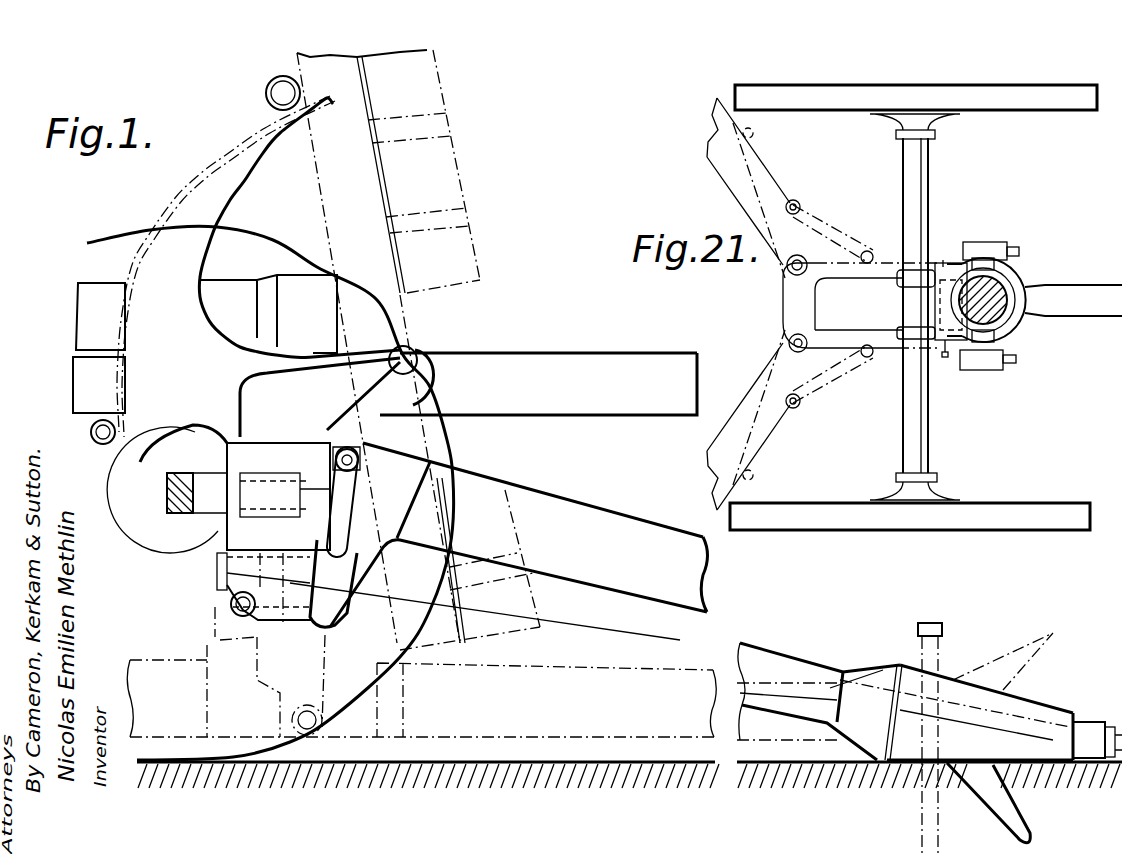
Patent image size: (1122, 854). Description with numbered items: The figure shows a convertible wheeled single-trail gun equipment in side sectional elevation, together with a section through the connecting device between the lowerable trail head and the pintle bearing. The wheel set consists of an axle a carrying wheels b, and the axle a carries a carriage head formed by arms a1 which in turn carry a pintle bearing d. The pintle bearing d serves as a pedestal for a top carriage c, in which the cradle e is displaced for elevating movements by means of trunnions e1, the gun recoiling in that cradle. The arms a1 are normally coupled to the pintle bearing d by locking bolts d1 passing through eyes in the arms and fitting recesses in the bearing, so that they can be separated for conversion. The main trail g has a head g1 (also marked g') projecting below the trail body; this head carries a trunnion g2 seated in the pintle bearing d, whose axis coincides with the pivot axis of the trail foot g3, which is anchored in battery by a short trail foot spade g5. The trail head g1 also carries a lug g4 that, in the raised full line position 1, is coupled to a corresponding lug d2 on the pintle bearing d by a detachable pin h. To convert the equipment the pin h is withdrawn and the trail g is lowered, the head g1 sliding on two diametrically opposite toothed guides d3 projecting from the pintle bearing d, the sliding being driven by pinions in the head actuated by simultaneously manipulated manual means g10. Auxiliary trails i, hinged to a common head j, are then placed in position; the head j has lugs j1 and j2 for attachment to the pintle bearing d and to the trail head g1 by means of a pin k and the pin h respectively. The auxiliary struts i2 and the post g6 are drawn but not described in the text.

In FIG. 1, the axle a is at (162, 490).
In FIG. 21, the axle a is at (917, 180).
In FIG. 1, the arms a1 is at (208, 480).
In FIG. 1, the wheels b is at (269, 252).
In FIG. 21, the wheels b is at (1055, 108).
In FIG. 1, the top carriage c is at (551, 362).
In FIG. 1, the trunnions e1 is at (400, 357).
In FIG. 1, the cradle e is at (638, 674).
In FIG. 1, the pintle bearing d is at (235, 487).
In FIG. 21, the pintle bearing d is at (1010, 320).
In FIG. 21, the locking bolts d1 is at (945, 358).
In FIG. 1, the lug d2 is at (338, 447).
In FIG. 21, the toothed guides d3 is at (983, 400).
In FIG. 1, the main trail g is at (519, 535).
In FIG. 21, the main trail g is at (1073, 327).
In FIG. 21, the trail head g' is at (1014, 295).
In FIG. 1, the trail head g1 is at (392, 585).
In FIG. 1, the trunnion g2 is at (300, 565).
In FIG. 21, the trail foot g3 is at (1037, 715).
In FIG. 1, the lug g4 is at (365, 448).
In FIG. 21, the trail foot spade g5 is at (1017, 810).
In FIG. 21, the post g6 is at (927, 827).
In FIG. 21, the manual means g10 is at (1013, 250).
In FIG. 1, the detachable pin h is at (364, 468).
In FIG. 21, the auxiliary trails i is at (742, 160).
In FIG. 21, the strut i2 is at (843, 233).
In FIG. 1, the common head j is at (140, 664).
In FIG. 21, the common head j is at (888, 278).
In FIG. 1, the lug j1 is at (230, 622).
In FIG. 1, the lug j2 is at (290, 700).
In FIG. 1, the pin k is at (258, 622).
In FIG. 21, the full line position 1 is at (750, 650).